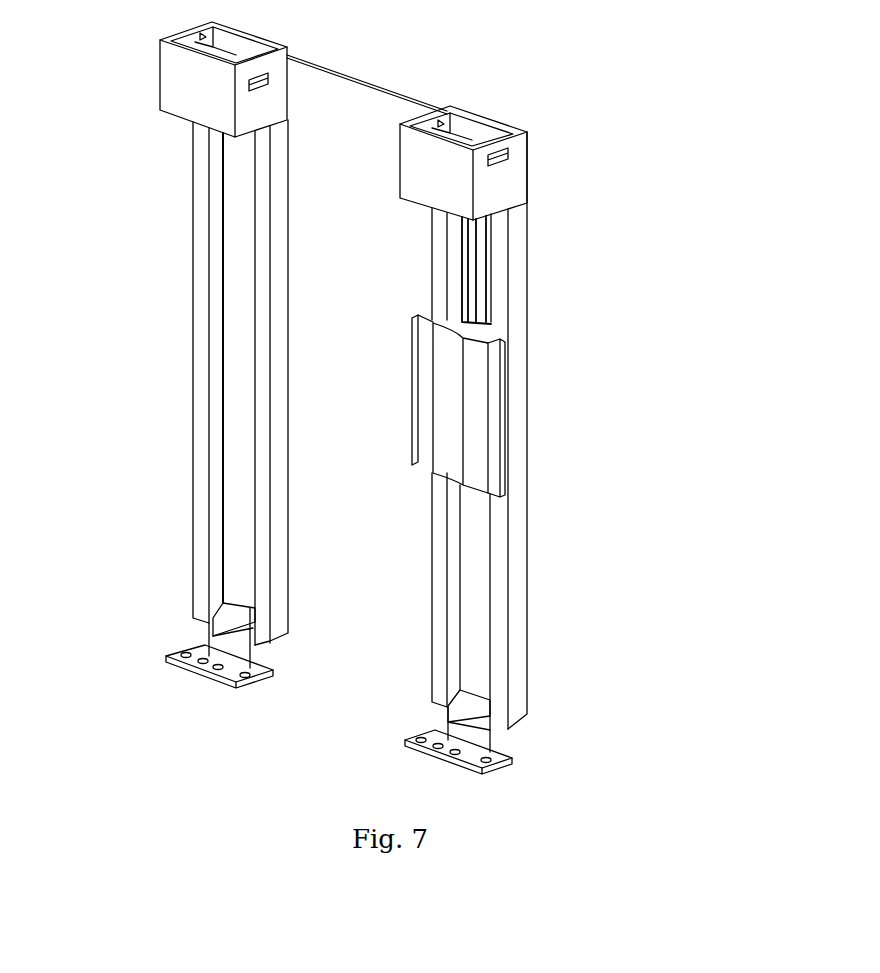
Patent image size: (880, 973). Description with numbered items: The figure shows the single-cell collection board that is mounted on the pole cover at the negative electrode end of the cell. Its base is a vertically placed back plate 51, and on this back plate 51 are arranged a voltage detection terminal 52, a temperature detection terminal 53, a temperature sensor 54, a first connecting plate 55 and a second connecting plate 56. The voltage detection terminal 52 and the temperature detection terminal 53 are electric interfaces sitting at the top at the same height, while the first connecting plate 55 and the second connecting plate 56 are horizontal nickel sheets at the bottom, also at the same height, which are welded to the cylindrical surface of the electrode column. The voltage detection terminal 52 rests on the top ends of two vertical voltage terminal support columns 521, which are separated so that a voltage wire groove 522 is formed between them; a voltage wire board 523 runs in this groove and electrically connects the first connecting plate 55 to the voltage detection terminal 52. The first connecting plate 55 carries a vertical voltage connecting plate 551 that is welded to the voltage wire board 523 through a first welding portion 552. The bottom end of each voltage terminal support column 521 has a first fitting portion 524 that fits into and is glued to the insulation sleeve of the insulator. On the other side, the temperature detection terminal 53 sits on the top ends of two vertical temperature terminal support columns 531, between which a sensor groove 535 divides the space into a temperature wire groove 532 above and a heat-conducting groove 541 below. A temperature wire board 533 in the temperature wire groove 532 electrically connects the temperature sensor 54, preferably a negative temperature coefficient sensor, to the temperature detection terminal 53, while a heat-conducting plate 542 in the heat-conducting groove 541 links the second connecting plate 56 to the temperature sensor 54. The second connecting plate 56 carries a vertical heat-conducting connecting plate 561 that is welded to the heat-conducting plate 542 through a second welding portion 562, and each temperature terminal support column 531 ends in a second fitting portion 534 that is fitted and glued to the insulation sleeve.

The back plate 51 is at (358, 110).
The voltage detection terminal 52 is at (175, 95).
The temperature detection terminal 53 is at (502, 185).
The temperature sensor 54 is at (470, 402).
The first connecting plate 55 is at (187, 667).
The second connecting plate 56 is at (407, 742).
The voltage terminal support column 521 is at (205, 320).
The voltage wire groove 522 is at (233, 452).
The voltage wire board 523 is at (240, 232).
The first fitting portion 524 is at (296, 668).
The temperature terminal support column 531 is at (498, 287).
The temperature wire groove 532 is at (478, 247).
The temperature wire board 533 is at (480, 302).
The second fitting portion 534 is at (562, 716).
The sensor groove 535 is at (493, 452).
The heat-conducting groove 541 is at (480, 565).
The heat-conducting plate 542 is at (485, 630).
The voltage connecting plate 551 is at (213, 638).
The first welding portion 552 is at (230, 618).
The heat-conducting connecting plate 561 is at (490, 733).
The second welding portion 562 is at (440, 656).